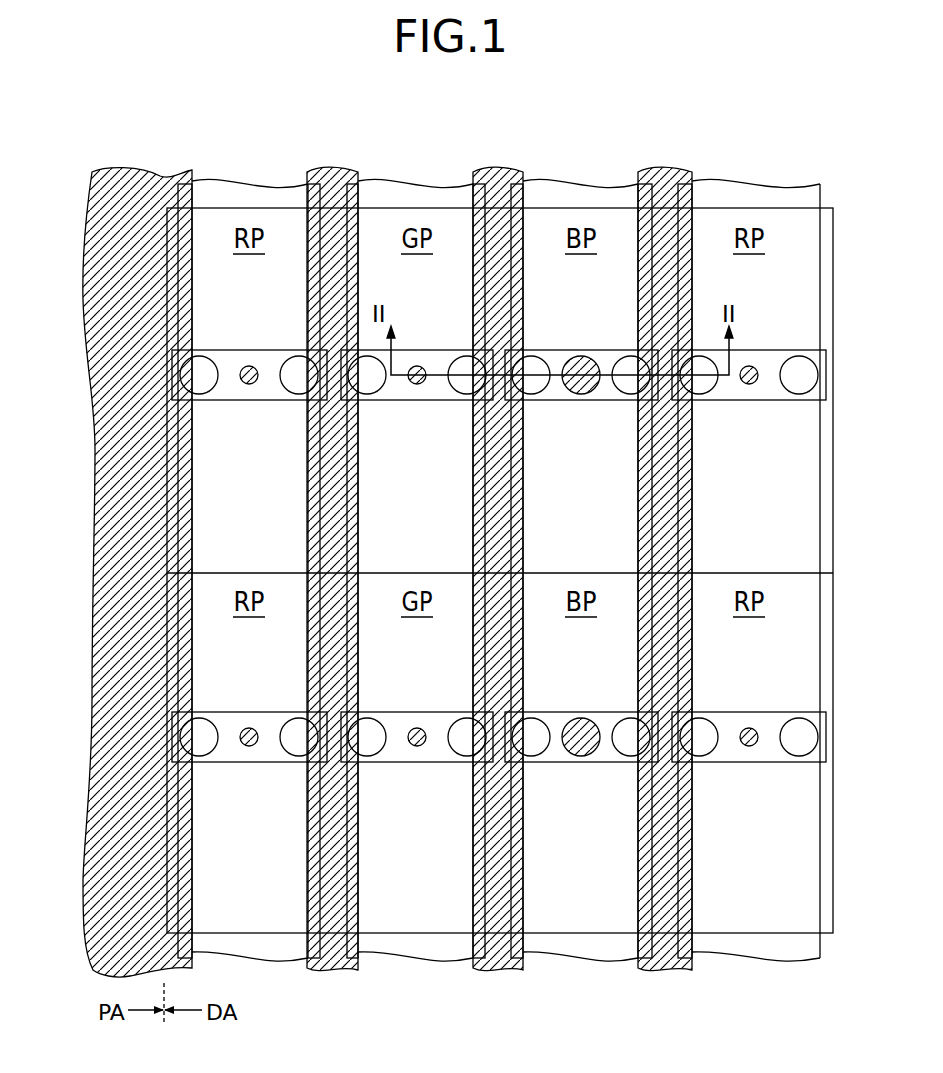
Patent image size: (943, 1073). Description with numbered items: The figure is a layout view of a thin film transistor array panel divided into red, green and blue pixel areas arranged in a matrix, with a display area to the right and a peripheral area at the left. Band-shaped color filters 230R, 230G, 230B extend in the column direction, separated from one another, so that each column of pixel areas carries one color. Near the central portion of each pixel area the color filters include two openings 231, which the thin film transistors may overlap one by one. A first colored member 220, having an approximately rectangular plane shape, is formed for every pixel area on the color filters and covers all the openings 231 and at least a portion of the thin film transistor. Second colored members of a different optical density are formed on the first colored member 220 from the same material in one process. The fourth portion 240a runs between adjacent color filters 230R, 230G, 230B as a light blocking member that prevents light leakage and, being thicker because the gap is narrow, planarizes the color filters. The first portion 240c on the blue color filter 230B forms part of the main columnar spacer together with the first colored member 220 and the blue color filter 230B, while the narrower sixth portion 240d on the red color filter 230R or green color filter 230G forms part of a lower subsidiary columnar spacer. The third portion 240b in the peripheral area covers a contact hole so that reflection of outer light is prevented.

The first colored member 220 is at (213, 400).
The opening 231 is at (200, 356).
The red color filter 230R is at (213, 182).
The green color filter 230G is at (381, 183).
The blue color filter 230B is at (546, 183).
The fourth portion 240a is at (345, 972).
The third portion 240b is at (118, 168).
The first portion 240c is at (582, 355).
The sixth portion 240d is at (249, 365).